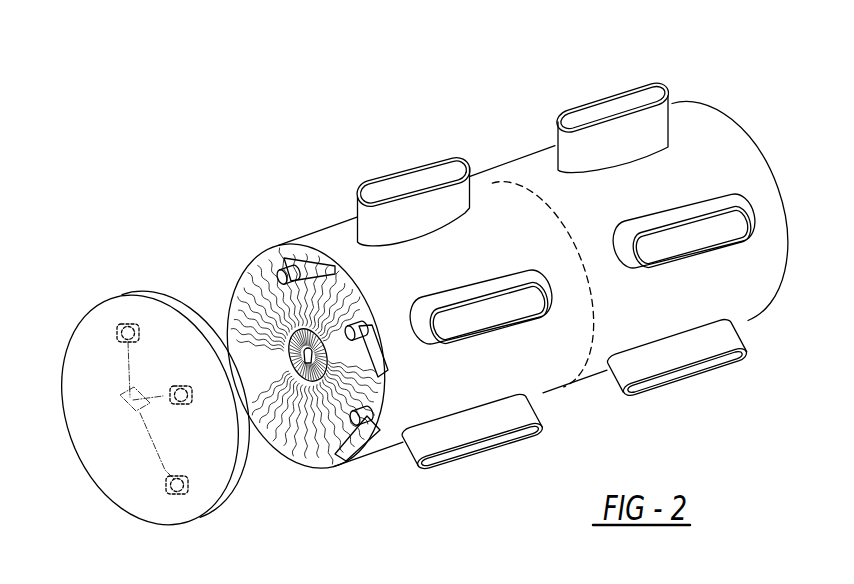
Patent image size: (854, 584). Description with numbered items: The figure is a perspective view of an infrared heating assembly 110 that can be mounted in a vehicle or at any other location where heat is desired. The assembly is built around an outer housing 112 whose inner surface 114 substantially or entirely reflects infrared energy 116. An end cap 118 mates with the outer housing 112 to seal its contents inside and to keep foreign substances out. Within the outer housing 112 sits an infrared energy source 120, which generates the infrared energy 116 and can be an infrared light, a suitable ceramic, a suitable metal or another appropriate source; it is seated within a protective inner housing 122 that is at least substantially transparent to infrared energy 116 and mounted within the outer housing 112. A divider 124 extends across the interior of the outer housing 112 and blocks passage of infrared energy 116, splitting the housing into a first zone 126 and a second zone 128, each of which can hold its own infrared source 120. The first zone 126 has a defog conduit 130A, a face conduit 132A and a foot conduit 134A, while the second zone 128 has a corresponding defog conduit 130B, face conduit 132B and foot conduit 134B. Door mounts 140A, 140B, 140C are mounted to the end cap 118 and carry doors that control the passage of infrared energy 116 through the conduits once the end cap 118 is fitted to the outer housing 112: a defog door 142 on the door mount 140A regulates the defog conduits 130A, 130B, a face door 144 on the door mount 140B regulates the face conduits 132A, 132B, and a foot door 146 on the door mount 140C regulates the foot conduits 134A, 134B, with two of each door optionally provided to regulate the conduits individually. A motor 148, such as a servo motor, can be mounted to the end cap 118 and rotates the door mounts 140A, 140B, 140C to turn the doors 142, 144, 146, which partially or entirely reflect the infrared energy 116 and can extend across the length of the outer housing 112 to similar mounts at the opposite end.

The infrared heating assembly 110 is at (178, 200).
The outer housing 112 is at (723, 130).
The inner surface 114 is at (327, 463).
The infrared energy 116 is at (263, 340).
The end cap 118 is at (180, 510).
The infrared energy source 120 is at (317, 377).
The protective inner housing 122 is at (295, 372).
The divider 124 is at (520, 177).
The first zone 126 is at (332, 238).
The second zone 128 is at (695, 110).
The defog conduit 130A is at (416, 181).
The defog conduit 130B is at (630, 103).
The face conduit 132A is at (472, 316).
The face conduit 132B is at (737, 220).
The foot conduit 134A is at (493, 443).
The foot conduit 134B is at (705, 368).
The door mount 140A is at (125, 333).
The door mount 140B is at (180, 392).
The door mount 140C is at (162, 487).
The defog door 142 is at (284, 258).
The face door 144 is at (387, 347).
The foot door 146 is at (380, 425).
The motor 148 is at (137, 417).